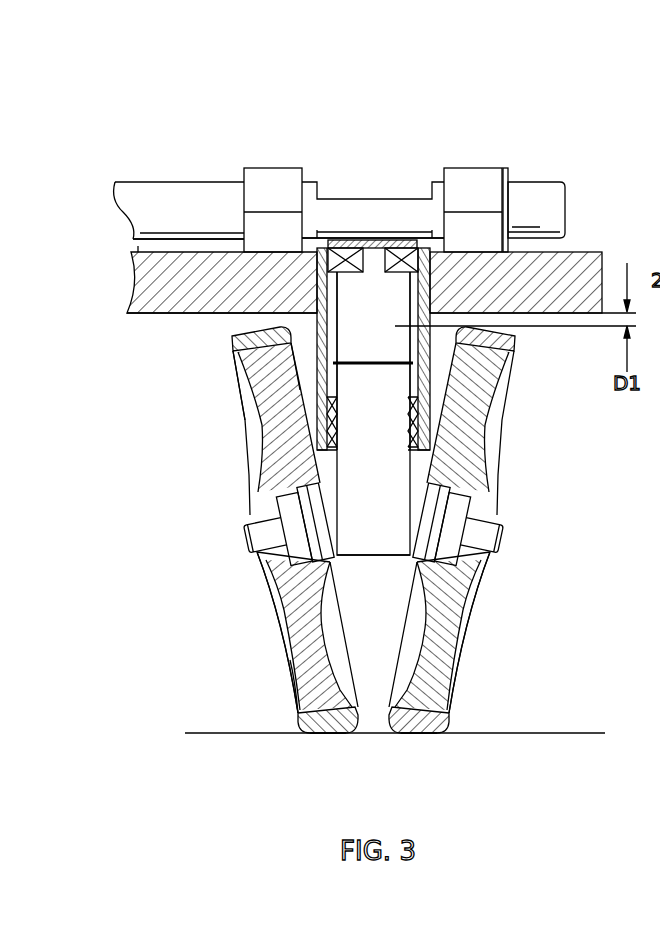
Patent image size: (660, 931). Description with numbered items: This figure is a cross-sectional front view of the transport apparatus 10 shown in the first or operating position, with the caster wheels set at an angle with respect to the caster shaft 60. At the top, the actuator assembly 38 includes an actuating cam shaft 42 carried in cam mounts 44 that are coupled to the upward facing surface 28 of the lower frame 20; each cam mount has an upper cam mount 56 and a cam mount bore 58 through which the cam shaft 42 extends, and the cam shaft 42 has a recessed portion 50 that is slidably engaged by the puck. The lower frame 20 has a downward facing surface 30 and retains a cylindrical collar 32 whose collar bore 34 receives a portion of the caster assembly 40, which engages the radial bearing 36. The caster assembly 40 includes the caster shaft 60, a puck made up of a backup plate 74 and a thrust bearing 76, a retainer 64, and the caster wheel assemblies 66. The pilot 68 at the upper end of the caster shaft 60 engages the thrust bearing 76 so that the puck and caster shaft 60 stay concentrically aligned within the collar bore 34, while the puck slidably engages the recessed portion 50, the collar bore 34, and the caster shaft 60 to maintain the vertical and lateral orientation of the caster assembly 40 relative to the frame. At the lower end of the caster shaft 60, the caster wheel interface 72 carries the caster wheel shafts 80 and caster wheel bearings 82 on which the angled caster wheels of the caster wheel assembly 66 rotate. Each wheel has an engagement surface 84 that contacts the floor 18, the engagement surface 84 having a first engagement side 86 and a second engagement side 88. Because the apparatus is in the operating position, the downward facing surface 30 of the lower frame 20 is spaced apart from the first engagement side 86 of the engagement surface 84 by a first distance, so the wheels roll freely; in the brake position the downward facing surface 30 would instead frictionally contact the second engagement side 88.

The transport apparatus 10 is at (316, 108).
The floor 18 is at (542, 733).
The lower frame 20 is at (135, 278).
The upward facing surface 28 is at (156, 252).
The downward facing surface 30 is at (156, 314).
The collar 32 is at (413, 388).
The collar bore 34 is at (422, 343).
The radial bearing 36 is at (415, 422).
The actuator assembly 38 is at (566, 191).
The caster assembly 40 is at (222, 472).
The cam shaft 42 is at (190, 190).
The cam mounts 44 is at (514, 158).
The recessed portion 50 is at (392, 197).
The upper cam mount 56 is at (490, 232).
The cam mount bore 58 is at (472, 168).
The caster shaft 60 is at (387, 498).
The retainer 64 is at (352, 367).
The caster wheel assembly 66 is at (495, 582).
The pilot 68 is at (288, 662).
The caster wheel interface 72 is at (396, 572).
The backup plate 74 is at (376, 250).
The thrust bearing 76 is at (400, 274).
The caster wheel shaft 80 is at (497, 533).
The caster wheel bearing 82 is at (482, 507).
The engagement surface 84 is at (335, 745).
The first engagement side 86 is at (236, 338).
The second engagement side 88 is at (272, 314).